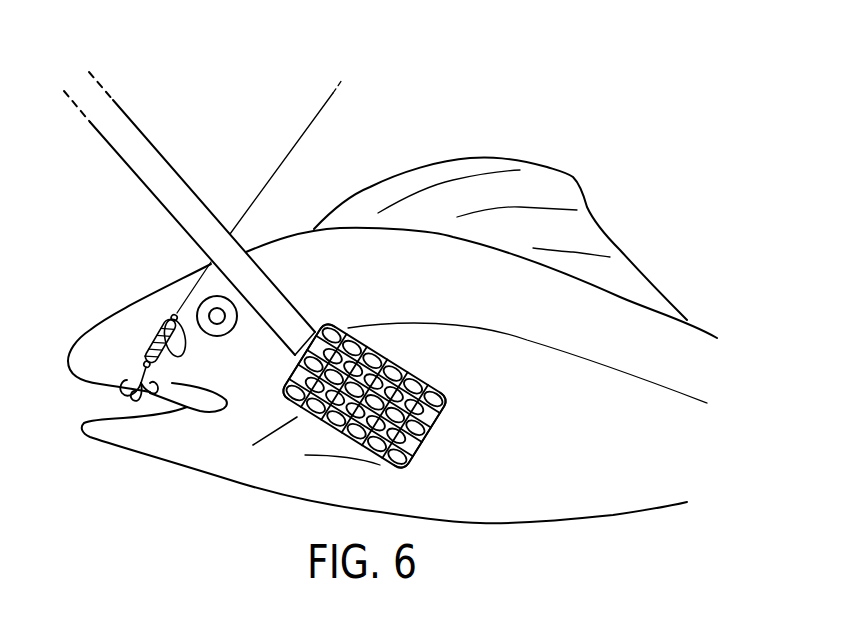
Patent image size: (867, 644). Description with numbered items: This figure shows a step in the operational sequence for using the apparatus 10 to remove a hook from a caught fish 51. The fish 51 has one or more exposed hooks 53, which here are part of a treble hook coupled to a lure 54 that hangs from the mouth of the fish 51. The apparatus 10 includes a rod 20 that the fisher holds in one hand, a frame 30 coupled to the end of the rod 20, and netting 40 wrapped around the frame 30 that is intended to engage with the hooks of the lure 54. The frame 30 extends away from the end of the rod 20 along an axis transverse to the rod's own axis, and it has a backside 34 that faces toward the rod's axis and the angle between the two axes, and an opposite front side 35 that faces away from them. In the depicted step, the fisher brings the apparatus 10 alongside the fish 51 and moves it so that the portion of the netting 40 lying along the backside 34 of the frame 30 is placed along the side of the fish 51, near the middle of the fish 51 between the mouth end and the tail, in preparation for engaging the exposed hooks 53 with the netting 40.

The apparatus 10 is at (147, 110).
The rod 20 is at (152, 162).
The frame 30 is at (427, 441).
The backside 34 is at (425, 469).
The front side 35 is at (308, 430).
The netting 40 is at (413, 380).
The fish 51 is at (633, 313).
The exposed hooks 53 is at (118, 392).
The lure 54 is at (152, 340).